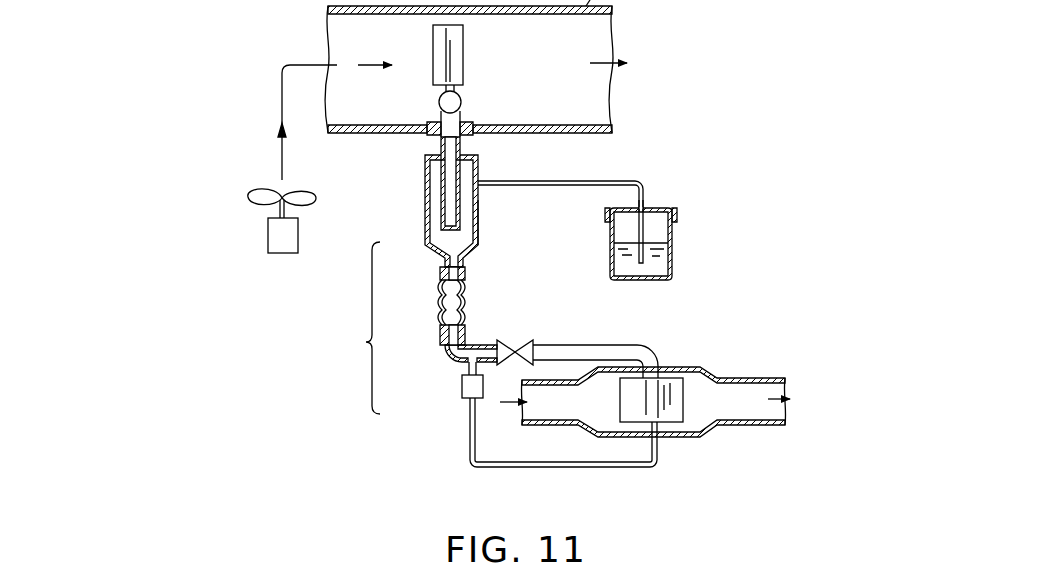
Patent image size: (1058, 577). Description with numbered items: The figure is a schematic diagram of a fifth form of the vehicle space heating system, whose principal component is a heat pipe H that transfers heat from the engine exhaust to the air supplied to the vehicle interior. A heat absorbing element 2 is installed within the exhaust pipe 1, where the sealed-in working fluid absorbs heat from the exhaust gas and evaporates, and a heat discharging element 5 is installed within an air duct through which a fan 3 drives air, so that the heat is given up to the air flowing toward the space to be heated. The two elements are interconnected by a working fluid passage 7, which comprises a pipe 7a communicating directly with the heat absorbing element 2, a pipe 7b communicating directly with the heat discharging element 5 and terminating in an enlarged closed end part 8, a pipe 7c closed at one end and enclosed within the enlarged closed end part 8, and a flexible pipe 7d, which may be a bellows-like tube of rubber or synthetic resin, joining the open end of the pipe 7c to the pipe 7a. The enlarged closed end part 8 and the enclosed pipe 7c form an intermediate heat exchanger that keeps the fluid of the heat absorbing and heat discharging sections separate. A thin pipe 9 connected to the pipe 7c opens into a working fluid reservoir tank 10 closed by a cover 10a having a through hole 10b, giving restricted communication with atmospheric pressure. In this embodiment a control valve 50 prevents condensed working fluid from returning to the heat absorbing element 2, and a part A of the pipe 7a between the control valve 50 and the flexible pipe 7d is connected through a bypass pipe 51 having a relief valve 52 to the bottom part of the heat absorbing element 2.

The exhaust pipe 1 is at (751, 380).
The heat absorbing element 2 is at (681, 390).
The fan 3 is at (258, 197).
The heat discharging element 5 is at (465, 60).
The working fluid passage 7 is at (418, 258).
The pipe 7a is at (576, 345).
The pipe 7b is at (440, 143).
The pipe 7c is at (478, 235).
The flexible pipe 7d is at (440, 305).
The enlarged closed end part 8 is at (441, 205).
The thin pipe 9 is at (540, 181).
The working fluid reservoir tank 10 is at (610, 260).
The cover 10a is at (658, 208).
The through hole 10b is at (627, 205).
The control valve 50 is at (510, 340).
The bypass pipe 51 is at (552, 468).
The relief valve 52 is at (462, 386).
The part of the pipe 7a A is at (446, 353).
The heat pipe H is at (355, 358).